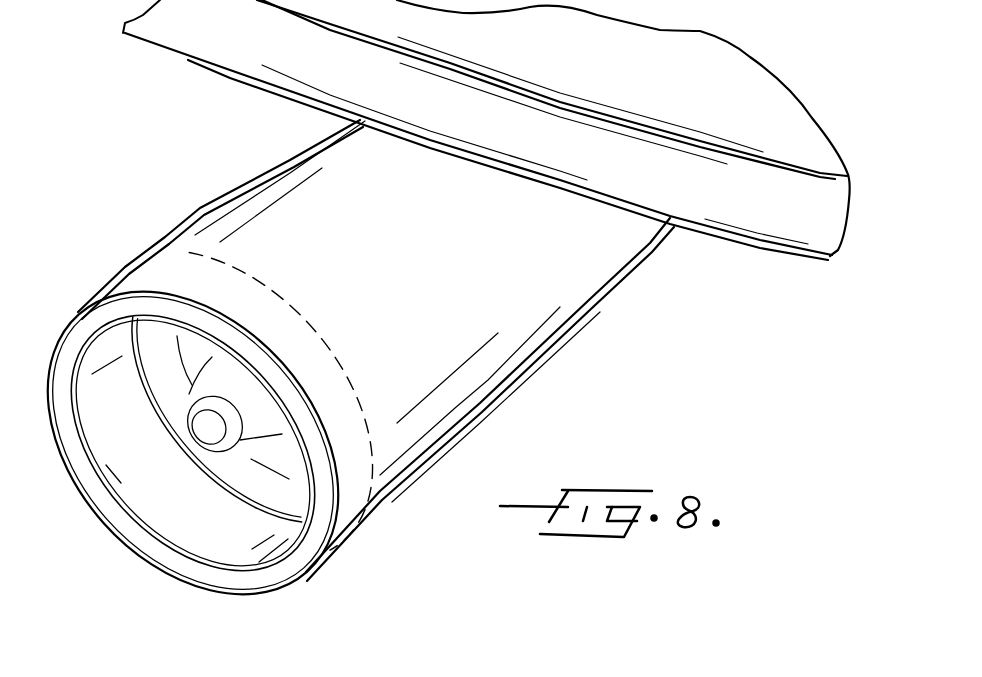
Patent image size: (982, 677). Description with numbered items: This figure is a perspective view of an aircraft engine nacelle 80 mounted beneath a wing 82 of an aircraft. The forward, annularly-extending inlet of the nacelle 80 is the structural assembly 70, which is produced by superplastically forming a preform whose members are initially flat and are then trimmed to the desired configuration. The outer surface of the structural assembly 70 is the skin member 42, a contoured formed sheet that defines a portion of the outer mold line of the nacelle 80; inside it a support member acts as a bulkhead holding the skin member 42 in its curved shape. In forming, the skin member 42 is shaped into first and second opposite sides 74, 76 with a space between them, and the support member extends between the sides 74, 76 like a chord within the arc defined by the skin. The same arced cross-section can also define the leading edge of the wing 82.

The skin member 42 is at (333, 410).
The structural assembly 70 is at (123, 262).
The first side 74 is at (173, 532).
The second side 76 is at (343, 520).
The nacelle 80 is at (641, 329).
The wing 82 is at (267, 60).